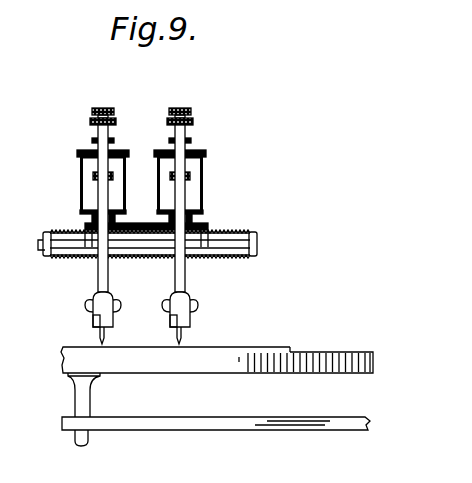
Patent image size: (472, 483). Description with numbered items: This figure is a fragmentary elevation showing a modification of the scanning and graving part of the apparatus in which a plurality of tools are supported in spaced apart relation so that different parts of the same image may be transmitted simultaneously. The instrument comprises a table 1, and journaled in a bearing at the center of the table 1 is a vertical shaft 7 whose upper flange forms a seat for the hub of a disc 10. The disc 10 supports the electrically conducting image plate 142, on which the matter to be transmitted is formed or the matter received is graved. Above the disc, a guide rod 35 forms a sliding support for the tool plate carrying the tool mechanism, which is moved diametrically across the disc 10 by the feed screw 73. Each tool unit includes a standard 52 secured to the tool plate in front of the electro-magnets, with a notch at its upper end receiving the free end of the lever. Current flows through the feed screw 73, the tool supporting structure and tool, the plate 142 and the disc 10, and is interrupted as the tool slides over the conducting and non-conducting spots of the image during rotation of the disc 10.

The table 1 is at (319, 416).
The vertical shaft 7 is at (84, 398).
The disc 10 is at (346, 352).
The guide rod 35 is at (252, 219).
The standard 52 is at (98, 276).
The feed screw 73 is at (62, 231).
The conducting image plate 142 is at (286, 346).